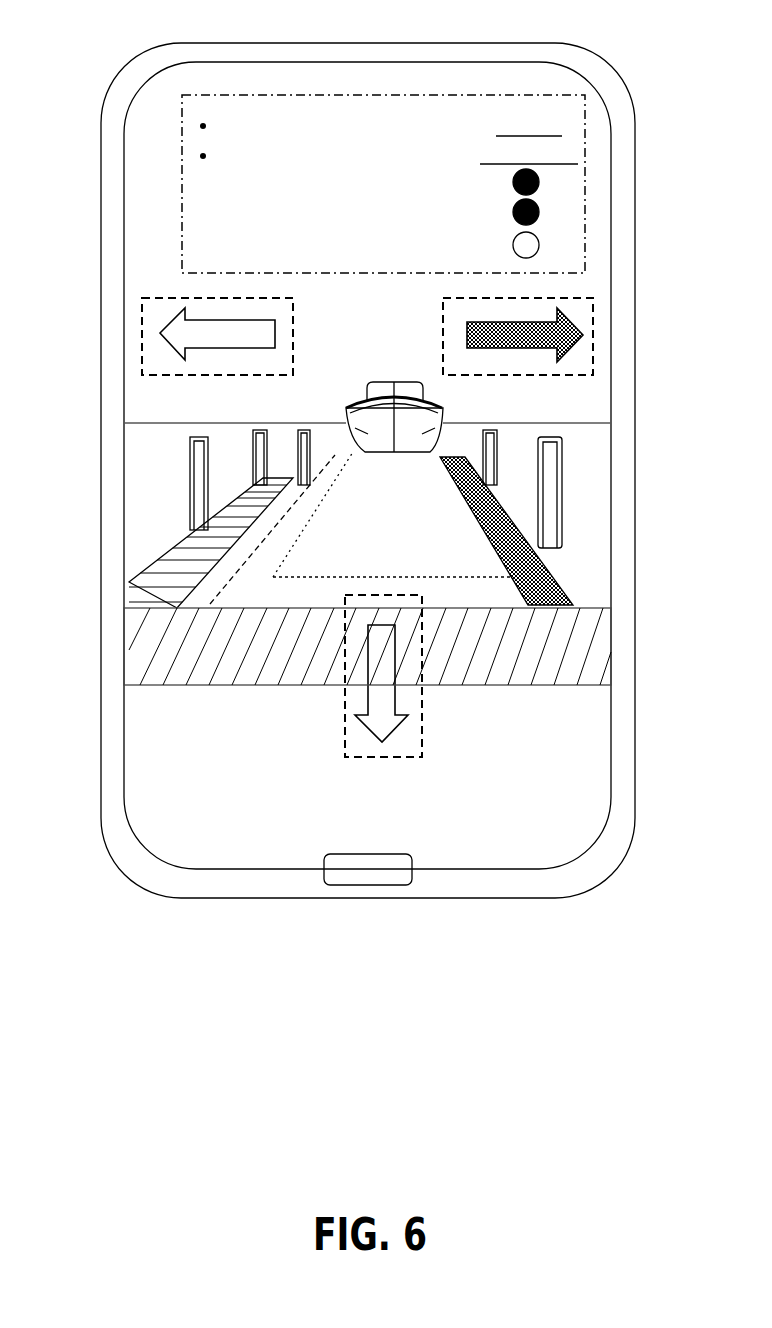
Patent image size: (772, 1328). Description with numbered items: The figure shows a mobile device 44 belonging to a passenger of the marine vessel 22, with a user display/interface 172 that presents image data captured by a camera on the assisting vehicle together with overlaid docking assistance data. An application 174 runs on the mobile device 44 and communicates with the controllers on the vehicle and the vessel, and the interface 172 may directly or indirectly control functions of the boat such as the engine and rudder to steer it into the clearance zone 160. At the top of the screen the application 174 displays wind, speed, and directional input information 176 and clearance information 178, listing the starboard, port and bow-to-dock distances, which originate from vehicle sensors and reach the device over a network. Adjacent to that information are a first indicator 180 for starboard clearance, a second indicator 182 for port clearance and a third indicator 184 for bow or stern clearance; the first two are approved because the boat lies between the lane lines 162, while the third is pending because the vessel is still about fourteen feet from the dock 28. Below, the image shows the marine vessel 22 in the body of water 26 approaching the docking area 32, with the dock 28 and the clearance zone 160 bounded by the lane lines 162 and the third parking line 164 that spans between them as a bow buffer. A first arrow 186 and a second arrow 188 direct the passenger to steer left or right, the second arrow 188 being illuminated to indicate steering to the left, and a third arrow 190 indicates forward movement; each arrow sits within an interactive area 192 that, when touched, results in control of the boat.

The mobile device 44 is at (628, 76).
The user display/interface 172 is at (193, 812).
The application 174 is at (357, 838).
The wind, speed, and directional input information 176 is at (272, 99).
The clearance information 178 is at (217, 142).
The first indicator 180 is at (540, 182).
The second indicator 182 is at (540, 212).
The third indicator 184 is at (540, 245).
The first arrow 186 is at (200, 327).
The second arrow 188 is at (513, 325).
The third arrow 190 is at (390, 735).
The interactive area 192 is at (142, 357).
The marine vessel 22 is at (392, 370).
The docking area 32 is at (567, 468).
The dock 28 is at (133, 583).
The body of water 26 is at (587, 515).
The clearance zone 160 is at (377, 493).
The lane lines 162 is at (277, 542).
The third parking line 164 is at (382, 577).